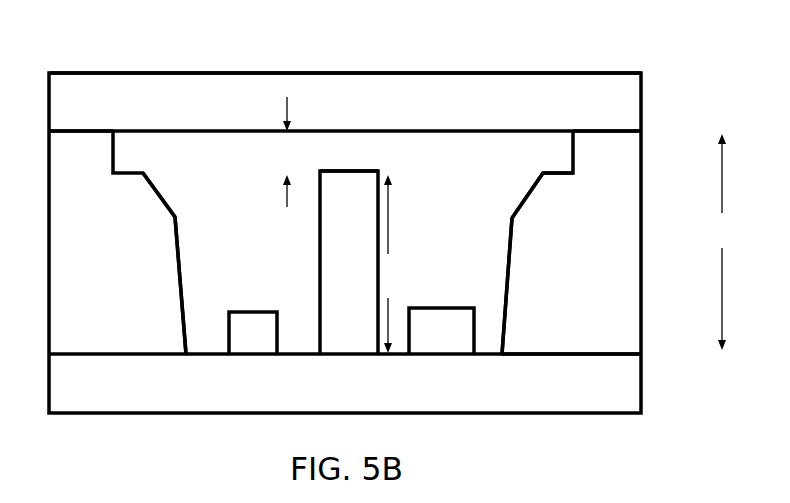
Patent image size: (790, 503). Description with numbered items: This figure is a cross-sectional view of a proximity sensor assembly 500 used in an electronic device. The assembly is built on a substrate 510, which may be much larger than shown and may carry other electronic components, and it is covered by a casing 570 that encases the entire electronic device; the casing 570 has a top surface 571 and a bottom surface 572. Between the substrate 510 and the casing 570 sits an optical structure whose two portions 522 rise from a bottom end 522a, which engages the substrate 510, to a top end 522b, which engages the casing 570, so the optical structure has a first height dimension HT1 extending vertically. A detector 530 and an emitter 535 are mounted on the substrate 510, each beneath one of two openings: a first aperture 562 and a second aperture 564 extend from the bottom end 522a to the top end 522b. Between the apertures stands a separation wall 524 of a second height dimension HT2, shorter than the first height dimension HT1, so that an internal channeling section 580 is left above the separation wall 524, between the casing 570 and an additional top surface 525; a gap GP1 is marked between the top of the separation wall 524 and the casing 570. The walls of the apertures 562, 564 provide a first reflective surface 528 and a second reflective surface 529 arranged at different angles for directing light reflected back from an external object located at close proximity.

The proximity sensor assembly 500 is at (615, 61).
The substrate 510 is at (415, 391).
The dielectric layer regions 522 is at (137, 288).
The bottom end 522a is at (588, 334).
The top end 522b is at (617, 152).
The separation wall 524 is at (364, 275).
The additional top surface 525 is at (564, 170).
The first reflective surface 528 is at (522, 194).
The second reflective surface 529 is at (182, 238).
The detector 530 is at (267, 344).
The emitter 535 is at (460, 339).
The first aperture 562 is at (272, 270).
The second aperture 564 is at (455, 241).
The casing 570 is at (547, 117).
The top surface 571 is at (63, 60).
The bottom surface 572 is at (112, 187).
The internal channeling section 580 is at (352, 165).
The gap distance GP1 is at (285, 152).
The first height dimension HT1 is at (725, 242).
The second height dimension HT2 is at (397, 264).